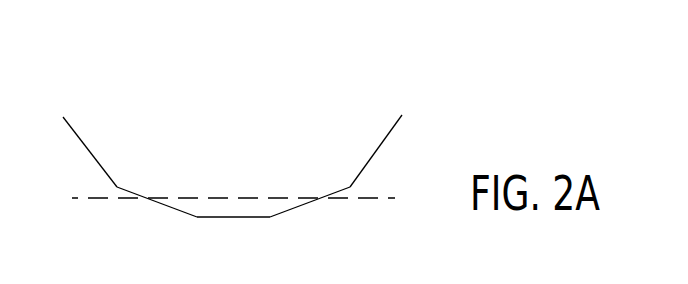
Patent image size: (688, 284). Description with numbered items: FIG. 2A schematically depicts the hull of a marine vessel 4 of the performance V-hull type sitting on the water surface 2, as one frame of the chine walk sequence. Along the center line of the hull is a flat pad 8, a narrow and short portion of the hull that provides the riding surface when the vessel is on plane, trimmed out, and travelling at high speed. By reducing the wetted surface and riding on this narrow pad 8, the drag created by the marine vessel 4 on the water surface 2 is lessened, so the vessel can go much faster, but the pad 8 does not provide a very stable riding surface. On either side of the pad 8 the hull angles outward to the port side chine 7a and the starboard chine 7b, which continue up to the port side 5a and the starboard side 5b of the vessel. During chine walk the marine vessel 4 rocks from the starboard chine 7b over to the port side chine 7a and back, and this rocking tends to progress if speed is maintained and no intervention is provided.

The marine vessel 4 is at (345, 80).
The water surface 2 is at (377, 200).
The port side 5a is at (90, 153).
The starboard side 5b is at (377, 150).
The port side chine 7a is at (153, 200).
The starboard chine 7b is at (313, 200).
The pad 8 is at (233, 218).